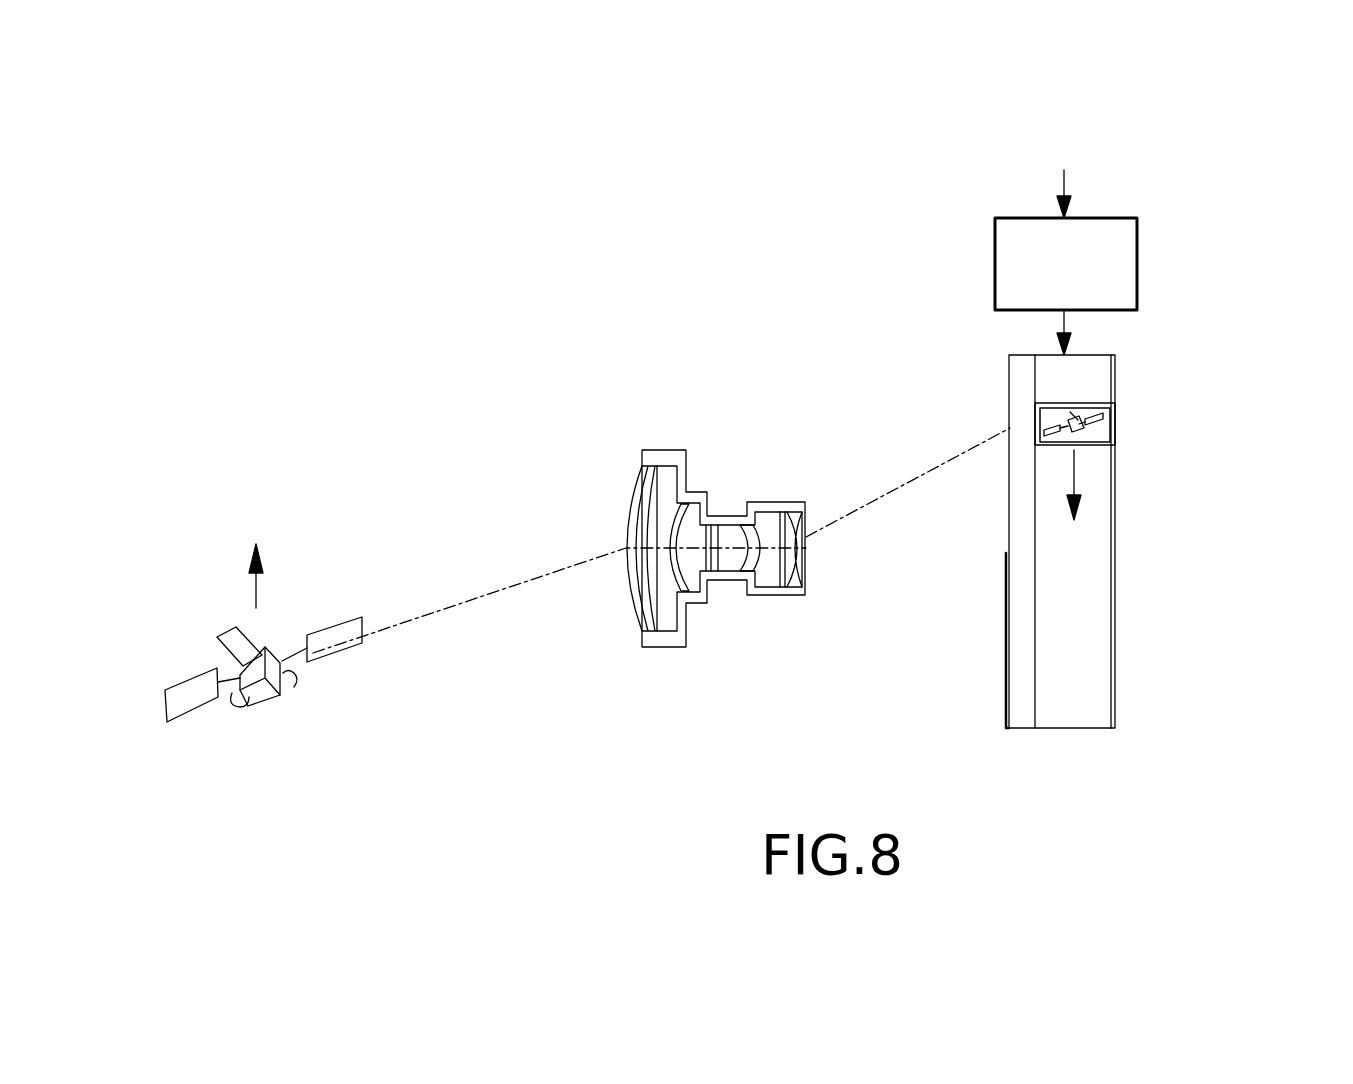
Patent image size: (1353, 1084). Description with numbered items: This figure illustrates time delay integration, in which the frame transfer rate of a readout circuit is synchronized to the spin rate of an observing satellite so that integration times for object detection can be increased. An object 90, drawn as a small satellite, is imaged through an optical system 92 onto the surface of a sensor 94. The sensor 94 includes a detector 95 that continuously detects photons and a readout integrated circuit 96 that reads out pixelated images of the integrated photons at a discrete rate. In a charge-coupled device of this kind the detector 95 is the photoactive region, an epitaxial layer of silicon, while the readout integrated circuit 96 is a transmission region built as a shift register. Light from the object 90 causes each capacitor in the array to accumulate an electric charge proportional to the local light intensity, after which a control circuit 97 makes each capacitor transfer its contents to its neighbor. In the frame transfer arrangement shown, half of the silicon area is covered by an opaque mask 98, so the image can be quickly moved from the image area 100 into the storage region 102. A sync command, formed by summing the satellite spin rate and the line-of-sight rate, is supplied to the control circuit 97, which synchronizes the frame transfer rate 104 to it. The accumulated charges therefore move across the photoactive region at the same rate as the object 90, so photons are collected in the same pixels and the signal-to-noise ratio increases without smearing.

The object 90 is at (248, 756).
The optical system 92 is at (583, 462).
The sensor 94 is at (1190, 232).
The detector 95 is at (975, 352).
The readout integrated circuit 96 is at (1113, 338).
The control circuit 97 is at (995, 250).
The opaque mask 98 is at (970, 668).
The image area 100 is at (1140, 355).
The storage region 102 is at (1140, 543).
The frame transfer rate 104 is at (1037, 500).